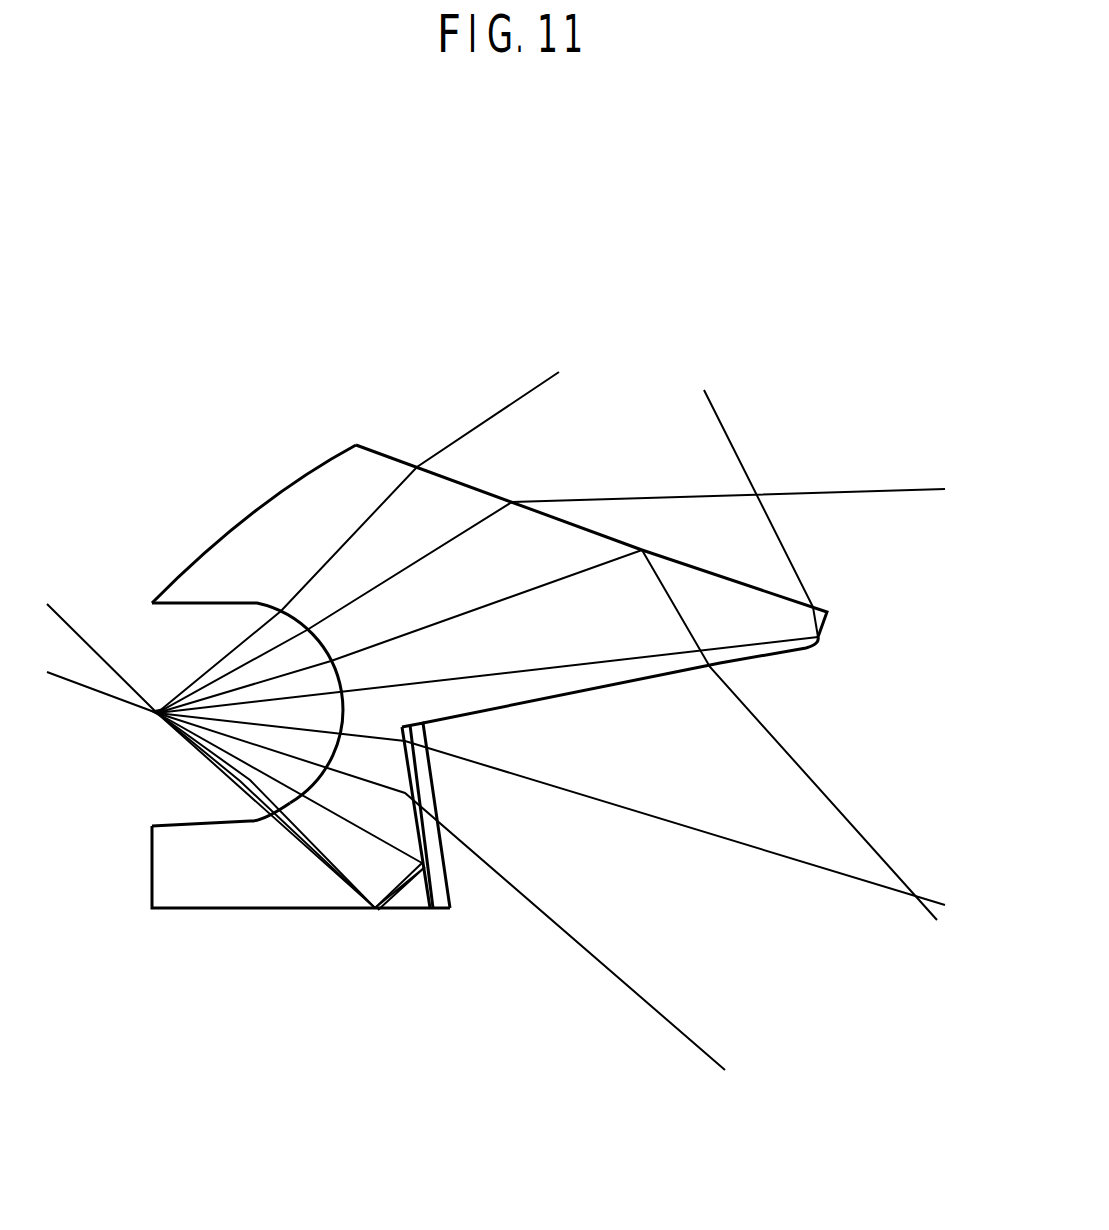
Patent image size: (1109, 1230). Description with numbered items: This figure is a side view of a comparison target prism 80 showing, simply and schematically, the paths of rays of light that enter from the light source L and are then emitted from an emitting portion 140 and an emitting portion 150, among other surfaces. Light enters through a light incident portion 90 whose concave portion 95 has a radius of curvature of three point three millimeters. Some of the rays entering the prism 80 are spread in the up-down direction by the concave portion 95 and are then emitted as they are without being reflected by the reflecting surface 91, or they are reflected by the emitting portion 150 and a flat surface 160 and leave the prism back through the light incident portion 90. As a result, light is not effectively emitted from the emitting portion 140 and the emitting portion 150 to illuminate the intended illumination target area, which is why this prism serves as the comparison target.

The comparison target prism 80 is at (500, 332).
The light source L is at (120, 729).
The light incident portion 90 is at (162, 647).
The reflecting surface 91 is at (462, 479).
The concave portion 95 is at (200, 794).
The emitting portion 140 is at (578, 694).
The emitting portion 150 is at (425, 782).
The flat surface 160 is at (245, 910).